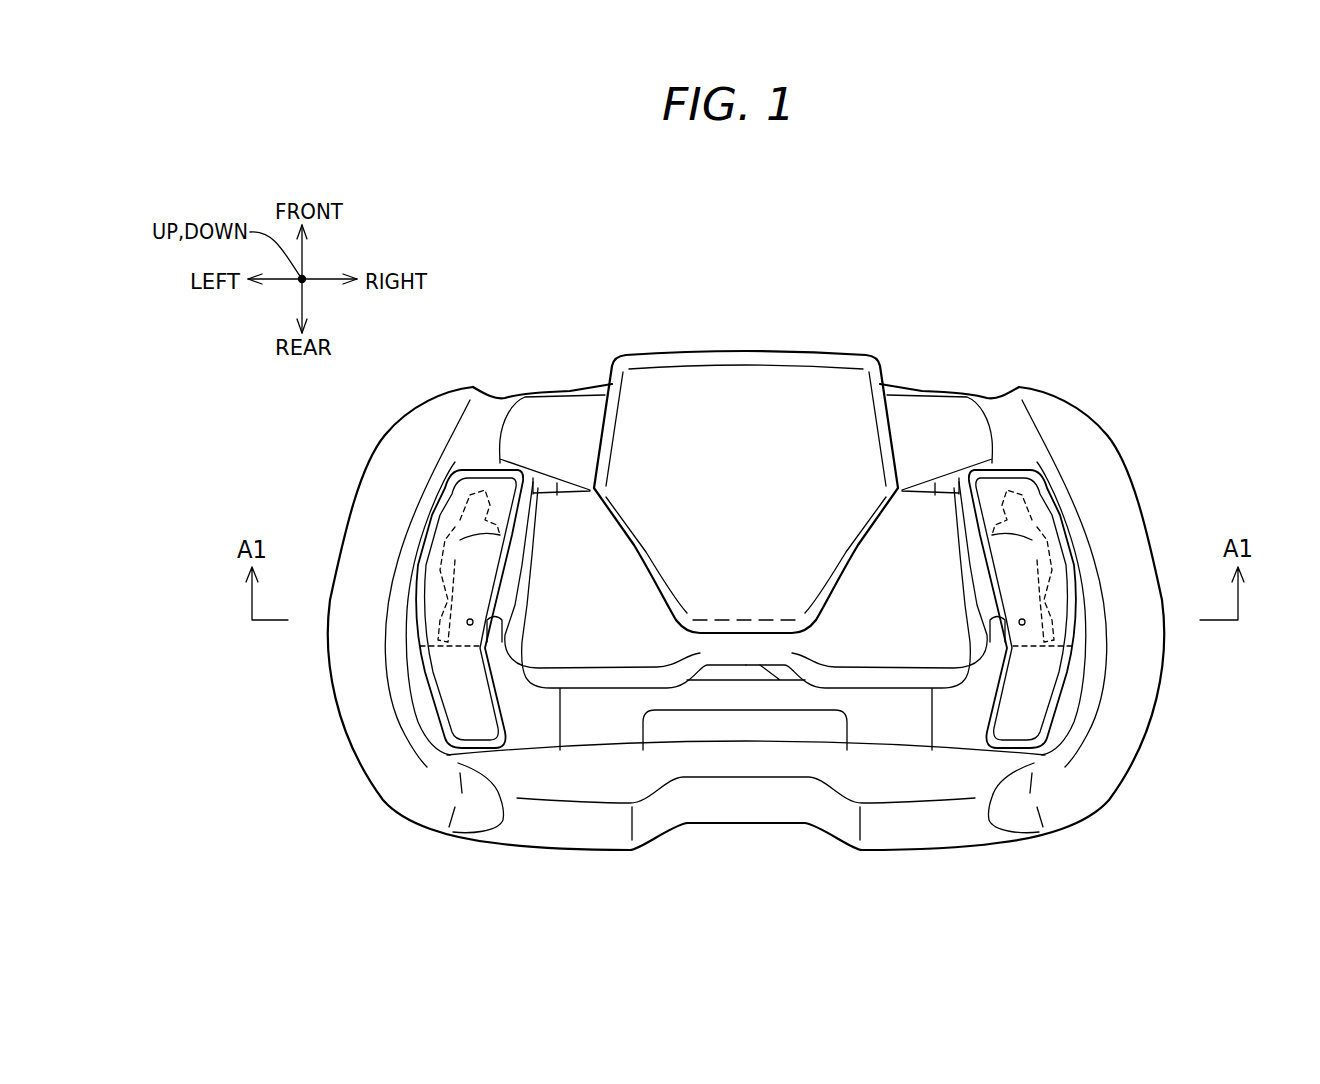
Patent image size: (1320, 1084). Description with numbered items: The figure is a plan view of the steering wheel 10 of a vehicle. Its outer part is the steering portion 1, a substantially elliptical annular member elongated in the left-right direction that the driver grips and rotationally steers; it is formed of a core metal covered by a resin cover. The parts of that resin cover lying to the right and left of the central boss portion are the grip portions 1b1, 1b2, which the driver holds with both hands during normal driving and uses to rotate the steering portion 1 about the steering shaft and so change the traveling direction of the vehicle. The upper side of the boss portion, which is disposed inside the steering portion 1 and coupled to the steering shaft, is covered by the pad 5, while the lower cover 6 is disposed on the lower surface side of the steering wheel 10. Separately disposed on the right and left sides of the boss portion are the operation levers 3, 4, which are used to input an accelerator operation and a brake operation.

The steering wheel 10 is at (1012, 368).
The steering portion 1 is at (476, 364).
The grip portion 1b1 is at (1110, 503).
The grip portion 1b2 is at (378, 498).
The operation lever 3 is at (1027, 703).
The operation lever 4 is at (465, 685).
The pad 5 is at (745, 387).
The lower cover 6 is at (600, 725).